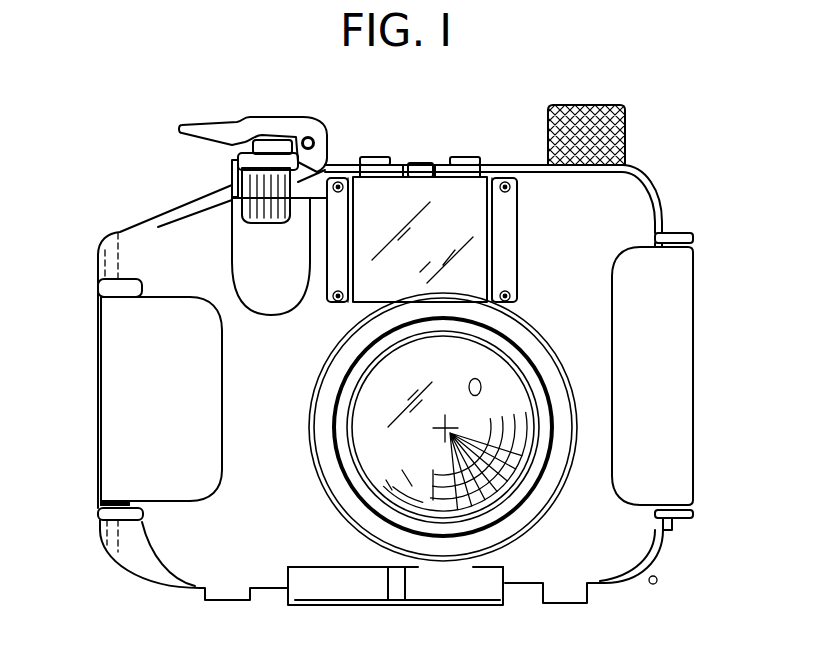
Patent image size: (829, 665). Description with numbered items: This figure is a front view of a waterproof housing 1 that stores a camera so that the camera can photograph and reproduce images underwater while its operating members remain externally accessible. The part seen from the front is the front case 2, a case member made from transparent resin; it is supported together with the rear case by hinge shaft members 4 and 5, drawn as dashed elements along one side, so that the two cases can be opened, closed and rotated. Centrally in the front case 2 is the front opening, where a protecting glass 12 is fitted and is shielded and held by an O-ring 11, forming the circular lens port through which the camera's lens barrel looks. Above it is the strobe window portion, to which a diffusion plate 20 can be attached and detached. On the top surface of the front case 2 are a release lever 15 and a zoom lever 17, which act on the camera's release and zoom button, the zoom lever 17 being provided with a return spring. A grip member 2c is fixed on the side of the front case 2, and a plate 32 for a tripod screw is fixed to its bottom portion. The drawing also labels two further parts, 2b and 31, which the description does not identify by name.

The waterproof housing 1 is at (66, 300).
The front case 2 is at (147, 550).
The left grip portion 2b is at (98, 427).
The grip member 2c is at (695, 441).
The hinge shaft member 4 is at (100, 258).
The hinge shaft member 5 is at (100, 528).
The O-ring 11 is at (548, 511).
The protecting glass 12 is at (433, 476).
The release lever 15 is at (300, 118).
The zoom lever 17 is at (230, 183).
The diffusion plate 20 is at (440, 220).
The dial 31 is at (587, 105).
The plate for tripod screw 32 is at (348, 607).